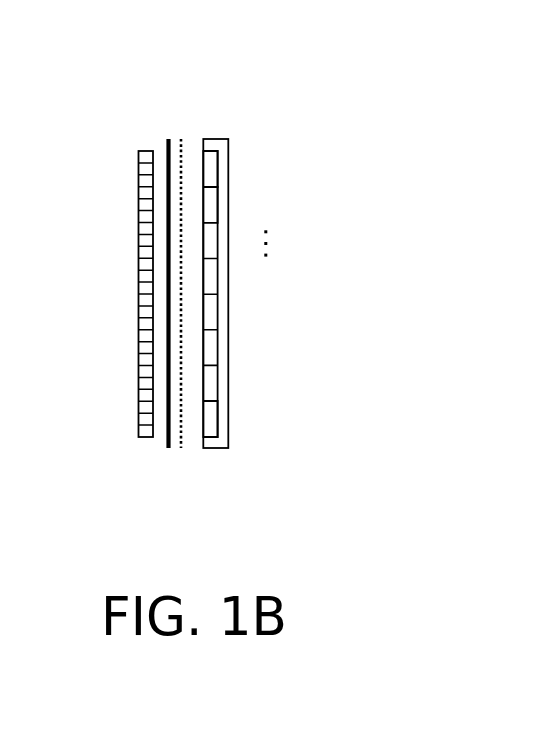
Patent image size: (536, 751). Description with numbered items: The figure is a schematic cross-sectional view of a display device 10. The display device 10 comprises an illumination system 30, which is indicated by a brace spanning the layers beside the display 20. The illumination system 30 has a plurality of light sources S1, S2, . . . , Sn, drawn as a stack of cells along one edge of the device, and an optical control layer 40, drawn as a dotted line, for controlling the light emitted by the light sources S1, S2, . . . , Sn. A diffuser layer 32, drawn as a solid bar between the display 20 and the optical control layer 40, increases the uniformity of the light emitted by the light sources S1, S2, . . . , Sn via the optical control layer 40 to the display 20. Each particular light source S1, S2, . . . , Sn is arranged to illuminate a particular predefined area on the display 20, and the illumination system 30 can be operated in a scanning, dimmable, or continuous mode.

The display device 10 is at (266, 82).
The display 20 is at (138, 457).
The illumination system 30 is at (228, 456).
The diffuser layer 32 is at (166, 140).
The optical control layer 40 is at (182, 139).
The light source S1 is at (208, 165).
The light source S2 is at (208, 202).
The light source Sn is at (208, 418).